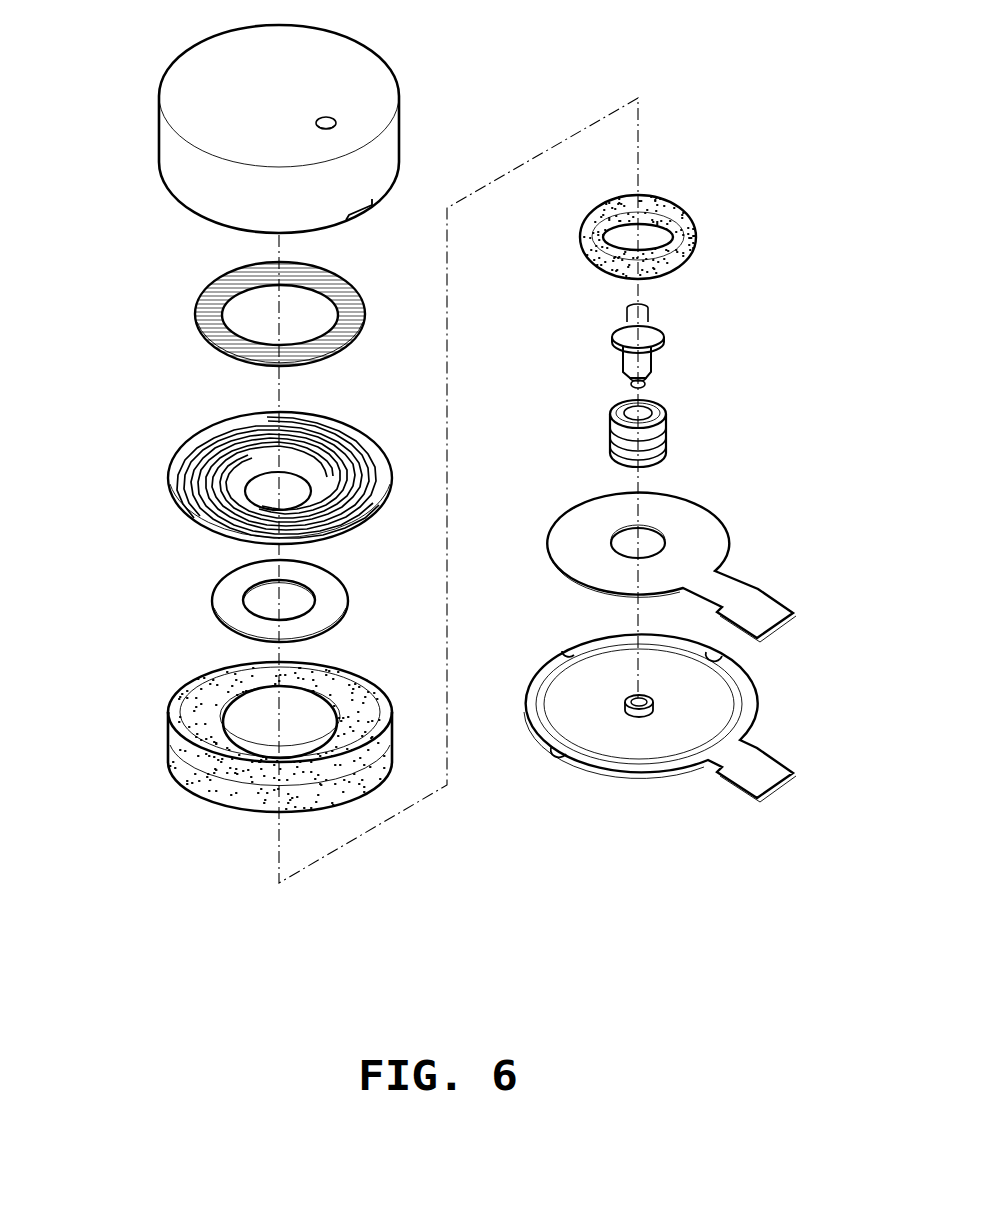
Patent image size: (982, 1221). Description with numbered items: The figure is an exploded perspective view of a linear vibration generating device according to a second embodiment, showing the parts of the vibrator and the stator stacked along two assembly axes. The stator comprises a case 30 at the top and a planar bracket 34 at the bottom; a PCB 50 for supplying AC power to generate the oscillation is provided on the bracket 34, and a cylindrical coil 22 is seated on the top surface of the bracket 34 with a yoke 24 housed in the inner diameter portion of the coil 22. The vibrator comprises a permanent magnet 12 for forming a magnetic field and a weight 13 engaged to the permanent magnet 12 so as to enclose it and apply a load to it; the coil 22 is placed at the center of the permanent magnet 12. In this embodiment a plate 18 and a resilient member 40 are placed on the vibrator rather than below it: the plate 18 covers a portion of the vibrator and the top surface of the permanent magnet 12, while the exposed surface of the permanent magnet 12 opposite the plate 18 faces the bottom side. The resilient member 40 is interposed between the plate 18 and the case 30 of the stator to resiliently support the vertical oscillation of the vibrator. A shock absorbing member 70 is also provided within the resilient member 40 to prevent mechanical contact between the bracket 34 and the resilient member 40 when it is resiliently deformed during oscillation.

The case 30 is at (175, 162).
The shock absorbing member 70 is at (192, 297).
The resilient member 40 is at (178, 462).
The plate 18 is at (227, 600).
The weight 13 is at (183, 727).
The permanent magnet 12 is at (683, 222).
The yoke 24 is at (650, 360).
The coil 22 is at (667, 433).
The PCB 50 is at (712, 527).
The bracket 34 is at (745, 688).